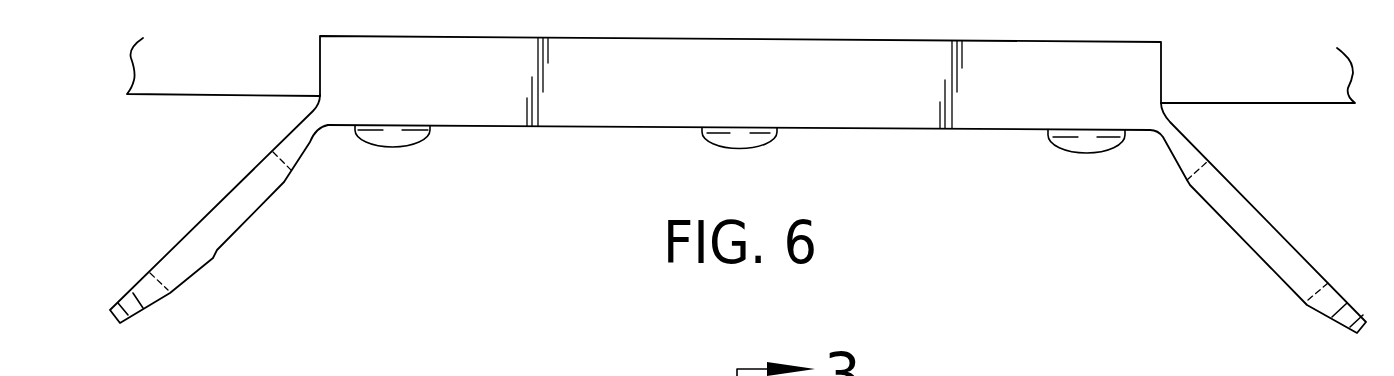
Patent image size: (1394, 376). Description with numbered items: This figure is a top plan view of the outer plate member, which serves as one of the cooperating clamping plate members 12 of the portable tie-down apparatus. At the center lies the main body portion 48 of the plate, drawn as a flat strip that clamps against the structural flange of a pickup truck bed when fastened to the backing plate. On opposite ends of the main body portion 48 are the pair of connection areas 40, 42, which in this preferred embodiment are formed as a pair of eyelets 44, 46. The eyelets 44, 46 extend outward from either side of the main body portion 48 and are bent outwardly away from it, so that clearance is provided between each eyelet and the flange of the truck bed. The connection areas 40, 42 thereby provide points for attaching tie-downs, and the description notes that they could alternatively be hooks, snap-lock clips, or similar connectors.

The clamping plate member 12 is at (503, 133).
The connection area 40 is at (242, 237).
The connection area 42 is at (1272, 292).
The eyelet 44 is at (200, 233).
The eyelet 46 is at (1285, 256).
The main body portion 48 is at (860, 102).